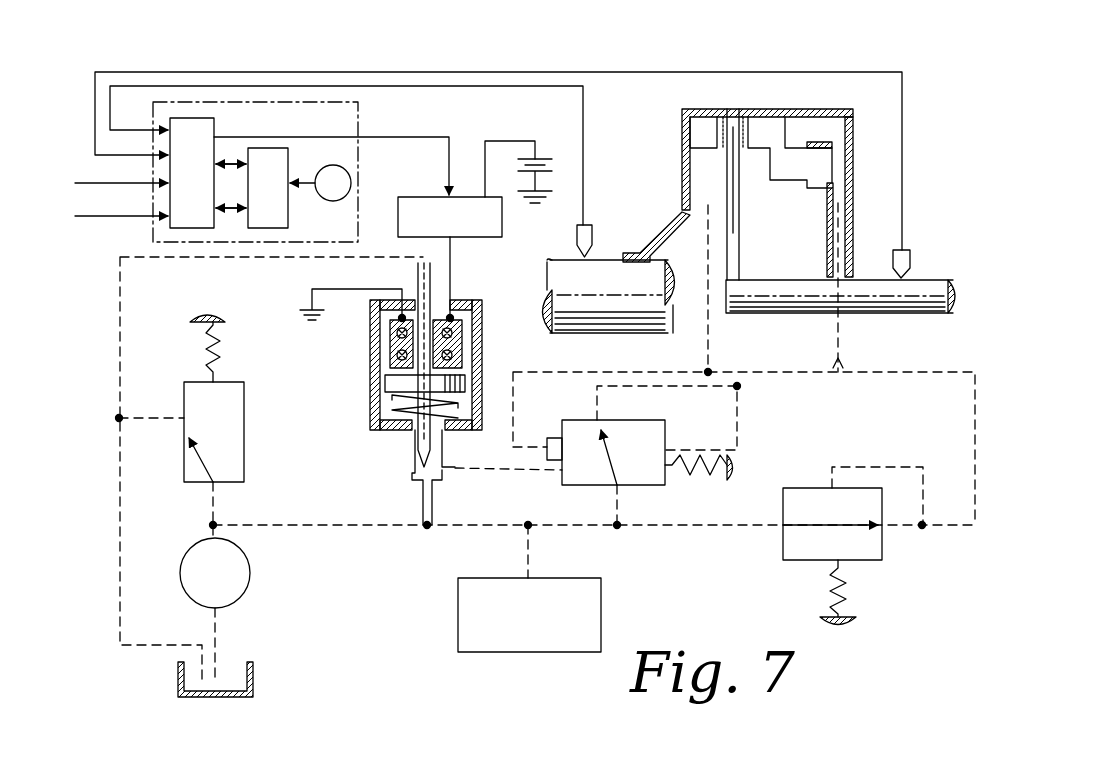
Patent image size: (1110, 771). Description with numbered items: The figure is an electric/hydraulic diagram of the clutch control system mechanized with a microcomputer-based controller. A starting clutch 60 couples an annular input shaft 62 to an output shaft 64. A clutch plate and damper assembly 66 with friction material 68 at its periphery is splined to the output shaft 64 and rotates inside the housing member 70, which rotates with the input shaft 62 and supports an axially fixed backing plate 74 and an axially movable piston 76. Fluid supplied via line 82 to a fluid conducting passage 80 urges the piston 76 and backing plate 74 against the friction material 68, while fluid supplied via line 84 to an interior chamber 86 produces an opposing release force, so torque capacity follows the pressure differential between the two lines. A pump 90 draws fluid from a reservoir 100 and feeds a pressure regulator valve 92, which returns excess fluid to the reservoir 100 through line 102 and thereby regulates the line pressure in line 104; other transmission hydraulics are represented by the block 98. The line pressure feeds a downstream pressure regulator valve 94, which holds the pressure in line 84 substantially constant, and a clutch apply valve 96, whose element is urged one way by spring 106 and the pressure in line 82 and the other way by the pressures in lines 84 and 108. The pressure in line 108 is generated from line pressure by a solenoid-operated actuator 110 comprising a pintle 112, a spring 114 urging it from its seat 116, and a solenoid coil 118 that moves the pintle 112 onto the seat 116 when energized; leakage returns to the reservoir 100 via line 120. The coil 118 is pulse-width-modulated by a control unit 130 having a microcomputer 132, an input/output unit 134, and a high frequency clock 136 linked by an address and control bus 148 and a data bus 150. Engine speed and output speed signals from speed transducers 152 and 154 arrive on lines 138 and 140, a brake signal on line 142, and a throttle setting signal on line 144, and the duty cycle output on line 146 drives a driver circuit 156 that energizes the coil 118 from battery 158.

The starting clutch 60 is at (910, 148).
The input shaft 62 is at (613, 317).
The output shaft 64 is at (890, 312).
The clutch plate and damper assembly 66 is at (740, 210).
The friction material 68 is at (727, 145).
The housing member 70 is at (735, 109).
The backing plate 74 is at (695, 120).
The piston 76 is at (770, 125).
The fluid conducting passage 80 is at (835, 170).
The line 82 is at (836, 350).
The line 84 is at (712, 335).
The interior chamber 86 is at (686, 163).
The pump 90 is at (240, 585).
The pressure regulator valve 92 is at (244, 447).
The pressure regulator valve 94 is at (865, 558).
The clutch apply valve 96 is at (640, 432).
The block 98 is at (580, 595).
The reservoir 100 is at (253, 665).
The line 102 is at (122, 540).
The line 104 is at (290, 527).
The spring 106 is at (700, 478).
The line 108 is at (492, 473).
The solenoid-operated actuator 110 is at (366, 335).
The pintle 112 is at (430, 445).
The spring 114 is at (392, 405).
The seat 116 is at (412, 485).
The solenoid coil 118 is at (447, 352).
The line 120 is at (178, 262).
The control unit 130 is at (342, 115).
The microcomputer 132 is at (288, 220).
The input/output unit 134 is at (175, 218).
The high frequency clock 136 is at (352, 183).
The line 138 is at (215, 86).
The line 140 is at (175, 72).
The line 142 is at (78, 183).
The line 144 is at (83, 218).
The line 146 is at (455, 137).
The address and control bus 148 is at (232, 164).
The data bus 150 is at (232, 210).
The speed transducer 152 is at (598, 235).
The speed transducer 154 is at (905, 258).
The driver circuit 156 is at (487, 222).
The battery 158 is at (540, 158).